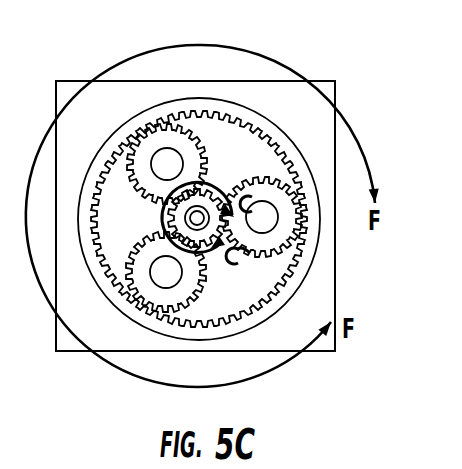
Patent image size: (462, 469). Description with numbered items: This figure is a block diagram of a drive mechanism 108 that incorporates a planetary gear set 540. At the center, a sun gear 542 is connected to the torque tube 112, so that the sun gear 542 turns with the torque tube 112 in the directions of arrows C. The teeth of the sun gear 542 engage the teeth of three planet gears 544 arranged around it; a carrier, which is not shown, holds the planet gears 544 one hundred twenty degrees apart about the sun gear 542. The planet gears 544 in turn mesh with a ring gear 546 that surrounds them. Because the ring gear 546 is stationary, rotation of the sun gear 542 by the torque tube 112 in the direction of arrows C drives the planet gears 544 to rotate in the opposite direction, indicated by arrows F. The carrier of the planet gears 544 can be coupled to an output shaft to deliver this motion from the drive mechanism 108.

The drive mechanism 108 is at (175, 178).
The torque tube 112 is at (207, 191).
The planetary gear set 540 is at (323, 267).
The sun gear 542 is at (165, 217).
The planet gears 544 is at (180, 140).
The ring gear 546 is at (276, 137).